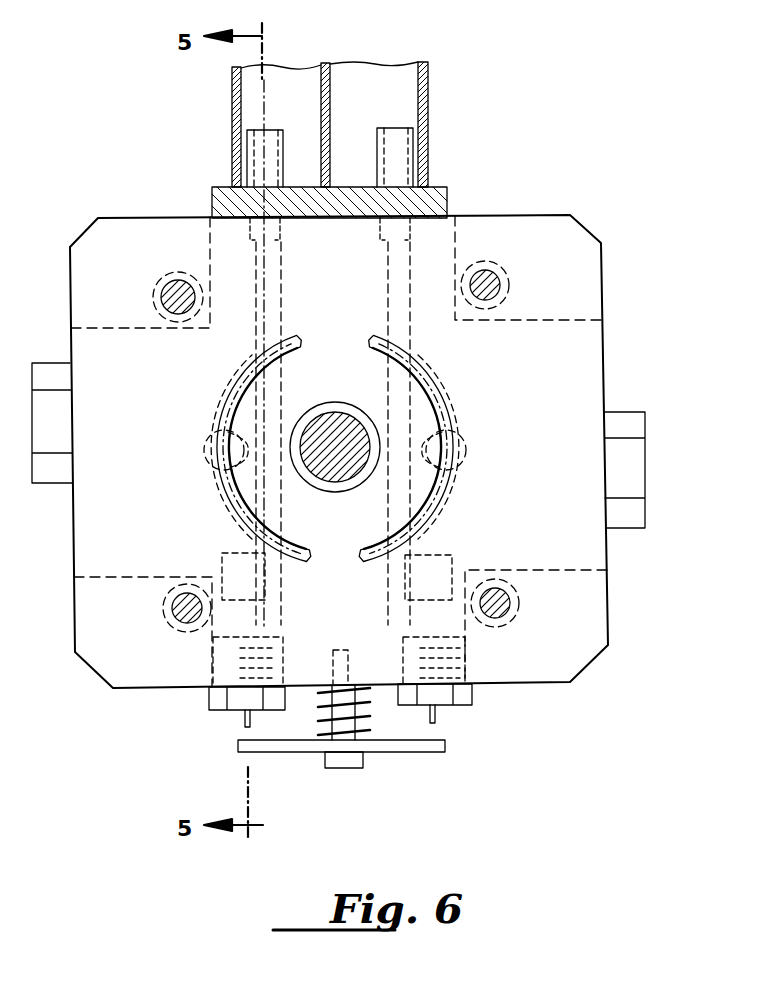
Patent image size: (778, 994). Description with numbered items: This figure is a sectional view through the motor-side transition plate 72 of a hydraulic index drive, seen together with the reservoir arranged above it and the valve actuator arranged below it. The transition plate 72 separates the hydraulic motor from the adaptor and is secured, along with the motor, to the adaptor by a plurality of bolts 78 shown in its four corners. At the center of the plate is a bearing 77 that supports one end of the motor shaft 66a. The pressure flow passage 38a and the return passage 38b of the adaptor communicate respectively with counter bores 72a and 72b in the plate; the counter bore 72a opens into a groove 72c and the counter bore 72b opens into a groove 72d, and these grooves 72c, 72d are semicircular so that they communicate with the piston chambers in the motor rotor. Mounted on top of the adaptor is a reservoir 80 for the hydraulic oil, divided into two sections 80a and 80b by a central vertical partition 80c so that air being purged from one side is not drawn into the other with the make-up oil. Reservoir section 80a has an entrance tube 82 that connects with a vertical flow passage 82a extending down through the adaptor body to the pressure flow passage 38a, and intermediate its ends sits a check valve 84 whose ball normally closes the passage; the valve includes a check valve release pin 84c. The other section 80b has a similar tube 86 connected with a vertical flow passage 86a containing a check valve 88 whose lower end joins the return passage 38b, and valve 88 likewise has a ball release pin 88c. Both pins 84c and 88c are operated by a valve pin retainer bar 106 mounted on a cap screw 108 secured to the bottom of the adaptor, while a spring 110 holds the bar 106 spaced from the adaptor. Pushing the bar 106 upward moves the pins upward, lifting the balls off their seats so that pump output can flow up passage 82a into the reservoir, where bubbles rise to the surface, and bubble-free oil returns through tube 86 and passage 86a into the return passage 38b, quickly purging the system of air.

The transition plate 72 is at (567, 652).
The counter bore 72a is at (205, 432).
The counter bore 72b is at (468, 432).
The groove 72c is at (238, 372).
The groove 72d is at (432, 372).
The bolts 78 is at (175, 290).
The reservoir 80 is at (428, 100).
The reservoir section 80a is at (245, 98).
The reservoir section 80b is at (395, 78).
The central vertical partition 80c is at (325, 65).
The entrance tube 82 is at (250, 153).
The vertical flow passage 82a is at (283, 292).
The tube 86 is at (408, 155).
The vertical flow passage 86a is at (392, 290).
The motor shaft 66a is at (342, 432).
The bearing 77 is at (346, 490).
The pressure flow passage 38a is at (212, 455).
The return passage 38b is at (458, 455).
The check valve 84 is at (225, 570).
The check valve release pin 84c is at (245, 718).
The check valve 88 is at (440, 572).
The ball release pin 88c is at (437, 715).
The valve pin retainer bar 106 is at (422, 745).
The cap screw 108 is at (345, 762).
The spring 110 is at (362, 700).